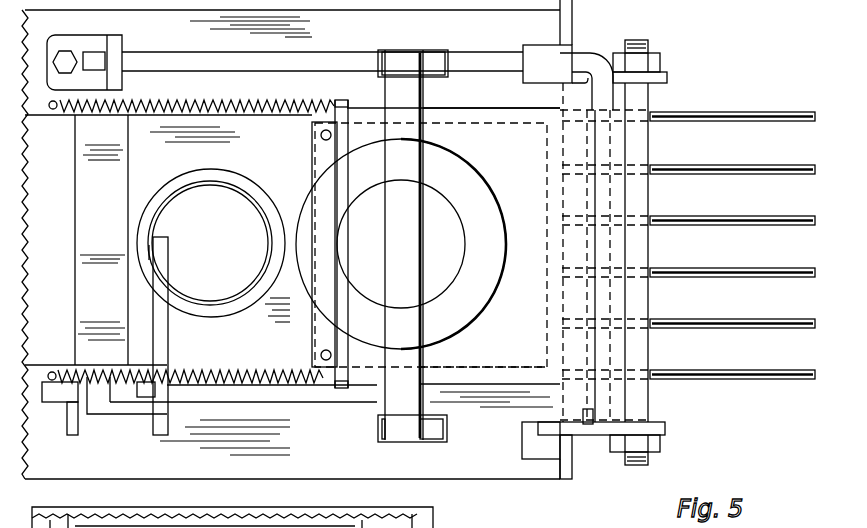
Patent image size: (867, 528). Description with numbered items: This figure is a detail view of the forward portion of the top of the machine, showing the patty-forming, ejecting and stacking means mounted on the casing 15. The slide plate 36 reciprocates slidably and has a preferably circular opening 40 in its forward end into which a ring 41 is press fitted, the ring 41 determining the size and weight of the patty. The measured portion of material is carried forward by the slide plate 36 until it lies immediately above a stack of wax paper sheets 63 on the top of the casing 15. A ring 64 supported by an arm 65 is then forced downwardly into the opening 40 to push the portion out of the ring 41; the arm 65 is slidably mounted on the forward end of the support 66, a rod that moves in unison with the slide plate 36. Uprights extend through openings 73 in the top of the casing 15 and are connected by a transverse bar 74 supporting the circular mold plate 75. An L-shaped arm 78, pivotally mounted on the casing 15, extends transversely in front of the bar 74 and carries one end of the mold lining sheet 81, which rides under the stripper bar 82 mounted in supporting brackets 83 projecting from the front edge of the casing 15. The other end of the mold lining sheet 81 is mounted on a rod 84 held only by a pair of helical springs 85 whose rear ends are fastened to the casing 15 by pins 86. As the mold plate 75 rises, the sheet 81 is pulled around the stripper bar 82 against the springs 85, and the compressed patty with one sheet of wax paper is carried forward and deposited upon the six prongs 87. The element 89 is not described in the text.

The casing 15 is at (538, 465).
The slide plate 36 is at (290, 147).
The opening 40 is at (210, 269).
The ring 41 is at (243, 173).
The wax paper sheets 63 is at (500, 362).
The ring 64 is at (203, 186).
The arm 65 is at (160, 301).
The support 66 is at (57, 389).
The openings 73 is at (437, 67).
The transverse bar 74 is at (407, 140).
The mold plate 75 is at (473, 198).
The L-shaped arm 78 is at (578, 63).
The mold lining sheet 81 is at (467, 115).
The stripper bar 82 is at (633, 102).
The supporting brackets 83 is at (660, 78).
The rod 84 is at (345, 96).
The helical springs 85 is at (197, 100).
The pins 86 is at (55, 110).
The prongs 87 is at (740, 114).
The frame 89 is at (248, 517).